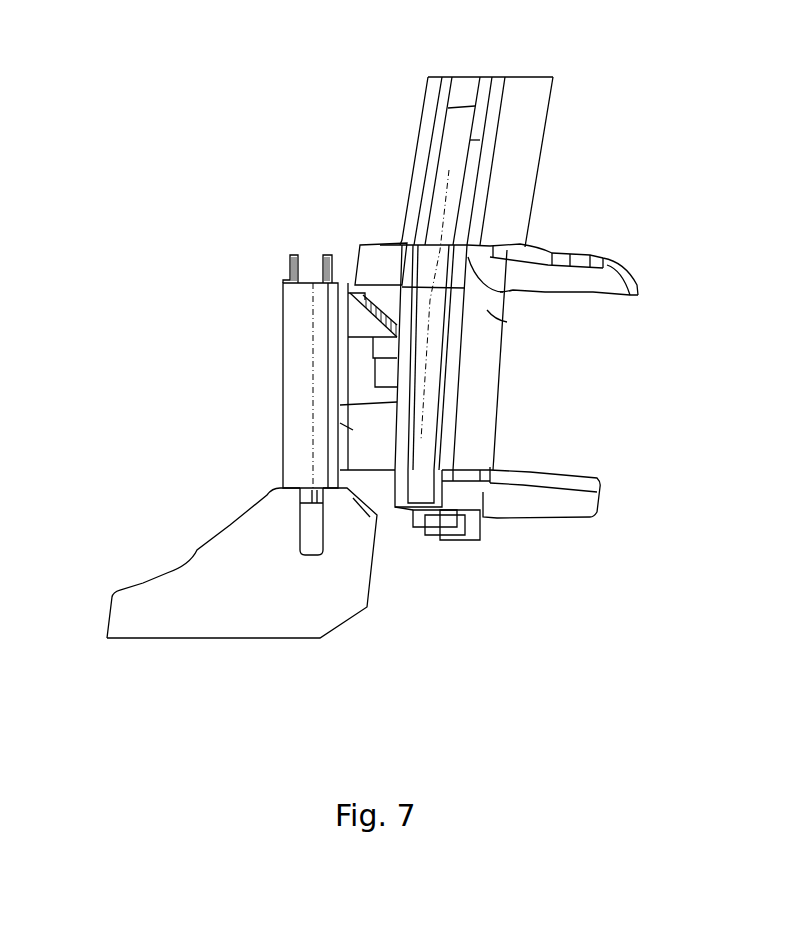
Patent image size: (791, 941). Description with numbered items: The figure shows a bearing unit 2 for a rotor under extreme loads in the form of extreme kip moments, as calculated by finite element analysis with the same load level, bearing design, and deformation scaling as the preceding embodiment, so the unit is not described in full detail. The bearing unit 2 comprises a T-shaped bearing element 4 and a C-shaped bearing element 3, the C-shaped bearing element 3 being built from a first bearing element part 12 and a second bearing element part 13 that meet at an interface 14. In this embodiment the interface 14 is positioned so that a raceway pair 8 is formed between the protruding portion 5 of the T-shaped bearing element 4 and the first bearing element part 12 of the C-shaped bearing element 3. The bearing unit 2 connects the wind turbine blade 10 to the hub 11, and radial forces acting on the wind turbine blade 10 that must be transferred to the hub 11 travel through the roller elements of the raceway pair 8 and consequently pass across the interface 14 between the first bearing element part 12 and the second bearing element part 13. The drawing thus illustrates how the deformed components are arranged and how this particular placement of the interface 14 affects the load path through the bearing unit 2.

The bearing unit 2 is at (120, 185).
The C-shaped bearing element 3 is at (505, 372).
The T-shaped bearing element 4 is at (300, 403).
The protruding portion 5 is at (360, 368).
The raceway pair 8 is at (385, 368).
The wind turbine blade 10 is at (510, 165).
The hub 11 is at (283, 580).
The first bearing element part 12 is at (470, 422).
The second bearing element part 13 is at (487, 290).
The interface 14 is at (486, 314).